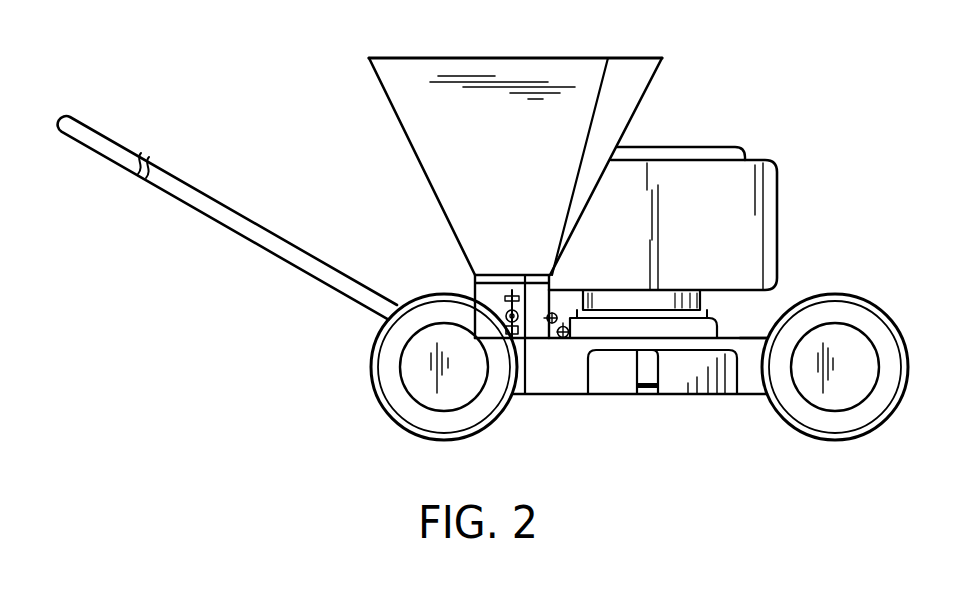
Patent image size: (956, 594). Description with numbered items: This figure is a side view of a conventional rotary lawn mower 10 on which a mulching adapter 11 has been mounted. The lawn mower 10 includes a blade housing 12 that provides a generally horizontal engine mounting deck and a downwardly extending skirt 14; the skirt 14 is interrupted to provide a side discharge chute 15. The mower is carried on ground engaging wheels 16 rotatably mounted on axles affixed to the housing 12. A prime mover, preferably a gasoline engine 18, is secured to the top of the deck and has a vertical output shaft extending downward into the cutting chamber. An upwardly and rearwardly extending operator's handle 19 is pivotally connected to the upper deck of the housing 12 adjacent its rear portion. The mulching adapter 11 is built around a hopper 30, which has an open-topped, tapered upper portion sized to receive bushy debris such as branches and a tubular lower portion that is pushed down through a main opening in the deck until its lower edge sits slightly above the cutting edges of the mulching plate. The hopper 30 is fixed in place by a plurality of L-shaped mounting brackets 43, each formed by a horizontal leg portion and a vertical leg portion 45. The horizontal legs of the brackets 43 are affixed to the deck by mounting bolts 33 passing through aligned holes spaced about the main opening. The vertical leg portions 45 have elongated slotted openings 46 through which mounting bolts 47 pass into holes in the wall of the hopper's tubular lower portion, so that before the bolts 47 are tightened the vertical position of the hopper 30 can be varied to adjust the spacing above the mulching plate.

The rotary lawn mower 10 is at (626, 137).
The mulching adapter 11 is at (456, 52).
The blade housing 12 is at (754, 336).
The skirt 14 is at (568, 380).
The side discharge chute 15 is at (620, 383).
The ground engaging wheels 16 is at (372, 378).
The gasoline engine 18 is at (714, 146).
The operator's handle 19 is at (176, 171).
The hopper 30 is at (418, 118).
The mounting bolts 33 is at (540, 340).
The L-shaped mounting brackets 43 is at (478, 297).
The vertical leg portion 45 is at (523, 275).
The elongated slotted openings 46 is at (502, 275).
The mounting bolts 47 is at (483, 275).